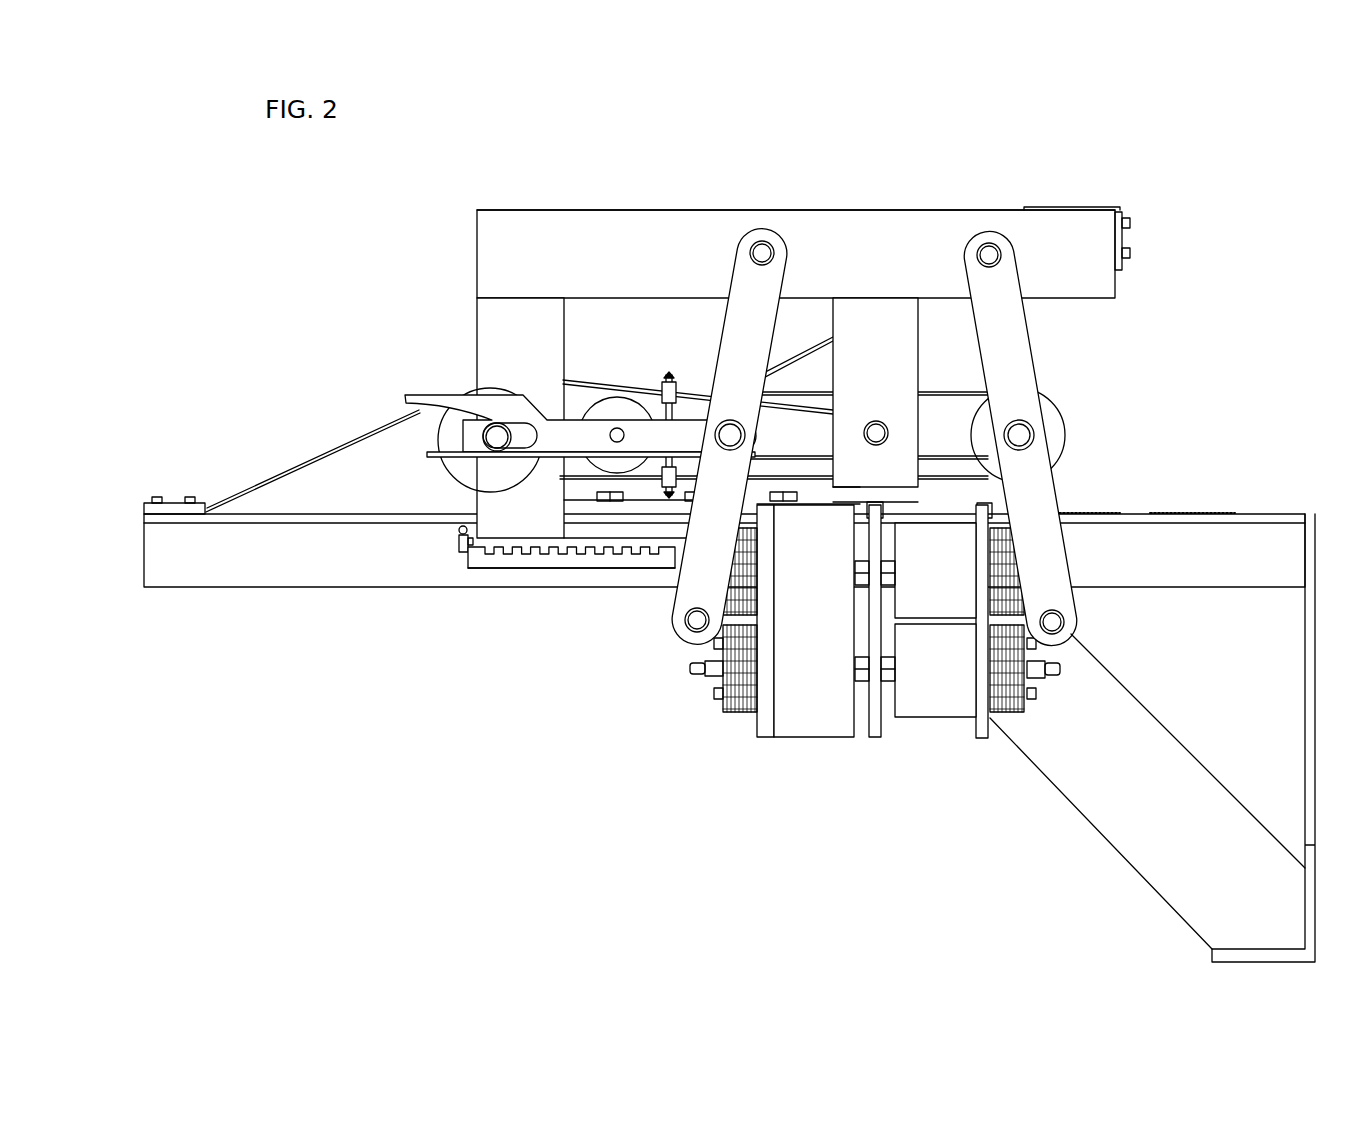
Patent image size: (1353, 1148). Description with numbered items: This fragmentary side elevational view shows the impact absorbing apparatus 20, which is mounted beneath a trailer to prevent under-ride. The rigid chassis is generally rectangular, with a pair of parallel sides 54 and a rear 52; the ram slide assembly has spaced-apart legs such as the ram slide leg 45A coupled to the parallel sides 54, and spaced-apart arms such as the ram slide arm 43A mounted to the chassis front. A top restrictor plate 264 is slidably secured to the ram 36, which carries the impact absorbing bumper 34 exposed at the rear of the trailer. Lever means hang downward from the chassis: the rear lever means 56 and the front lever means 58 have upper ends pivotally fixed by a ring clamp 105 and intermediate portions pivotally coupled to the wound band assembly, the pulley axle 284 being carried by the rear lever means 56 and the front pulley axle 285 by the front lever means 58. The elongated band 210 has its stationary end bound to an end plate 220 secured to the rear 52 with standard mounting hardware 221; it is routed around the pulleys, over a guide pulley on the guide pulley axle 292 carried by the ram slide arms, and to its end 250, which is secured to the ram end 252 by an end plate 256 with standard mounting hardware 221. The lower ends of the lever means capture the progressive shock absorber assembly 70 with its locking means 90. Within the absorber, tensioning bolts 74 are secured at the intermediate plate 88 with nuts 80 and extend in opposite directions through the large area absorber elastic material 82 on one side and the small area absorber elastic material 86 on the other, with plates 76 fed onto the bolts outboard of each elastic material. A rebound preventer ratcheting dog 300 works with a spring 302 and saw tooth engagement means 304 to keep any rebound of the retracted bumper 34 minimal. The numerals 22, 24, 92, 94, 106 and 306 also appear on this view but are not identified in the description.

The impact absorbing apparatus 20 is at (510, 149).
The base plate 22 is at (1080, 510).
The actuating bar 24 is at (445, 432).
The impact absorbing bumper 34 is at (1312, 606).
The ram 36 is at (303, 575).
The ram slide arm 43A is at (507, 328).
The ram slide leg 45A is at (877, 365).
The rear of chassis 52 is at (858, 193).
The parallel sides 54 is at (500, 243).
The rear lever means 56 is at (1008, 327).
The front lever means 58 is at (742, 288).
The progressive shock absorber assembly 70 is at (869, 717).
The absorber tensioning bolt 74 is at (1062, 672).
The plate 76 is at (762, 735).
The nut 80 is at (708, 680).
The large area absorber elastic material 82 is at (810, 730).
The small area absorber elastic material 86 is at (937, 700).
The progressive shock absorber intermediate plate 88 is at (882, 735).
The locking means 90 is at (1052, 708).
The bolt 92 is at (717, 555).
The pivot pin 94 is at (1058, 618).
The ring clamp 105 is at (1000, 250).
The roller 106 is at (1055, 415).
The elongated band 210 is at (622, 385).
The end plate 220 is at (1132, 255).
The standard mounting hardware 221 is at (1135, 223).
The band end 250 is at (285, 470).
The ram end 252 is at (185, 525).
The end plate 256 is at (178, 500).
The top restrictor plate 264 is at (610, 520).
The pulley axle 284 is at (1028, 437).
The front pulley axle 285 is at (730, 425).
The guide pulley axle 292 is at (497, 420).
The rebound preventer ratcheting dog 300 is at (460, 548).
The spring 302 is at (460, 533).
The saw tooth engagement means 304 is at (560, 565).
The rack base 306 is at (487, 568).